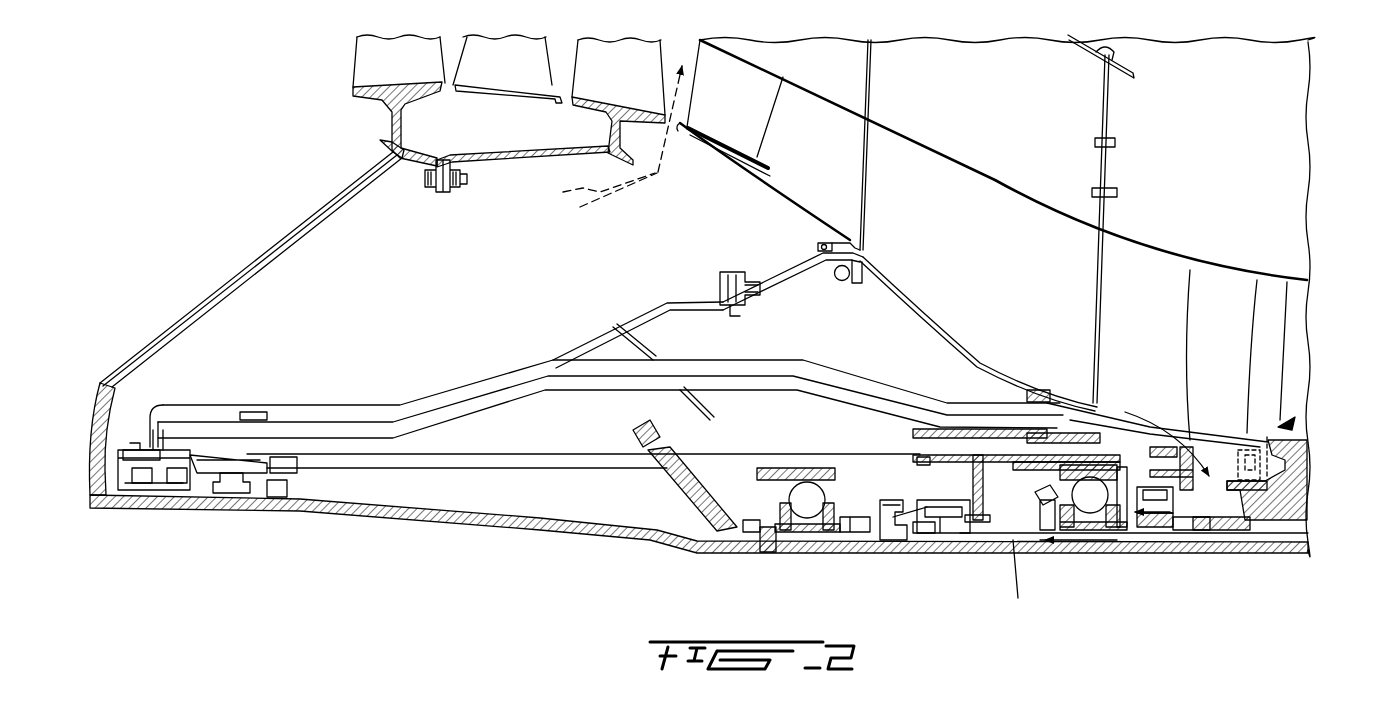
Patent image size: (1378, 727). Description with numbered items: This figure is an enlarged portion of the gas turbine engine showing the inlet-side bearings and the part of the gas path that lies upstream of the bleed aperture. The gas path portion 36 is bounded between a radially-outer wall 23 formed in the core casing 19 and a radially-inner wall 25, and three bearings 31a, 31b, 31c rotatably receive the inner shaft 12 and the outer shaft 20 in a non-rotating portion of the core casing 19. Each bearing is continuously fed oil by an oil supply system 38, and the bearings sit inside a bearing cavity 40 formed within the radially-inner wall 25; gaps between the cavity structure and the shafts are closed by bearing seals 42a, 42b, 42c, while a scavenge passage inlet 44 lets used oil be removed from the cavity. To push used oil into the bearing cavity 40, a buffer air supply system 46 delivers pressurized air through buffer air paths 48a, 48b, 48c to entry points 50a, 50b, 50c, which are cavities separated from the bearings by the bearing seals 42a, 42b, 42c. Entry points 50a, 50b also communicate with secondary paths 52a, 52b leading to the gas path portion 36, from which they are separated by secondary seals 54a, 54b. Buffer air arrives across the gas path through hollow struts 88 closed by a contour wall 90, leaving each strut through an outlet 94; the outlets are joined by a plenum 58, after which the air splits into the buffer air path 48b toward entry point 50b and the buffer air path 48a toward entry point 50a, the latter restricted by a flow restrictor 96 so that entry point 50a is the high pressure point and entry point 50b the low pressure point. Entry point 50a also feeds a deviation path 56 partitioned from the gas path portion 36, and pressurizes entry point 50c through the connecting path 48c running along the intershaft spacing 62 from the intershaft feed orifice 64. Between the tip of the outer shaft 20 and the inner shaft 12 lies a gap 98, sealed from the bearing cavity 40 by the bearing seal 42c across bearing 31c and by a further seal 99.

The inner shaft 12 is at (380, 518).
The core casing 19 is at (776, 183).
The outer shaft 20 is at (1280, 538).
The radially-outer wall 23 is at (897, 127).
The radially-inner wall 25 is at (812, 200).
The bearing 31a is at (1091, 497).
The bearing 31b is at (231, 488).
The bearing 31c is at (805, 498).
The gas path portion 36 is at (835, 153).
The oil supply system 38 is at (532, 477).
The bearing cavity 40 is at (908, 353).
The bearing seal 42a is at (1157, 505).
The bearing seal 42b is at (177, 481).
The bearing seal 42c is at (902, 538).
The scavenge passage inlet 44 is at (841, 282).
The buffer air supply system 46 is at (600, 355).
The buffer air path 48a is at (1163, 437).
The buffer air path 48b is at (480, 403).
The connecting path 48c is at (1017, 583).
The entry point 50a is at (1217, 452).
The entry point 50b is at (158, 473).
The entry point 50c is at (920, 534).
The secondary path 52a is at (1305, 432).
The secondary path 52b is at (603, 136).
The secondary seal 54a is at (1310, 478).
The secondary seal 54b is at (137, 481).
The deviation path 56 is at (1257, 540).
The plenum 58 is at (1077, 393).
The intershaft spacing 62 is at (978, 540).
The intershaft feed orifice 64 is at (1183, 531).
The hollow strut 88 is at (975, 246).
The contour wall 90 is at (866, 176).
The outlet 94 is at (1047, 390).
The flow restrictor 96 is at (1090, 400).
The gap 98 is at (930, 538).
The seal 99 is at (950, 507).